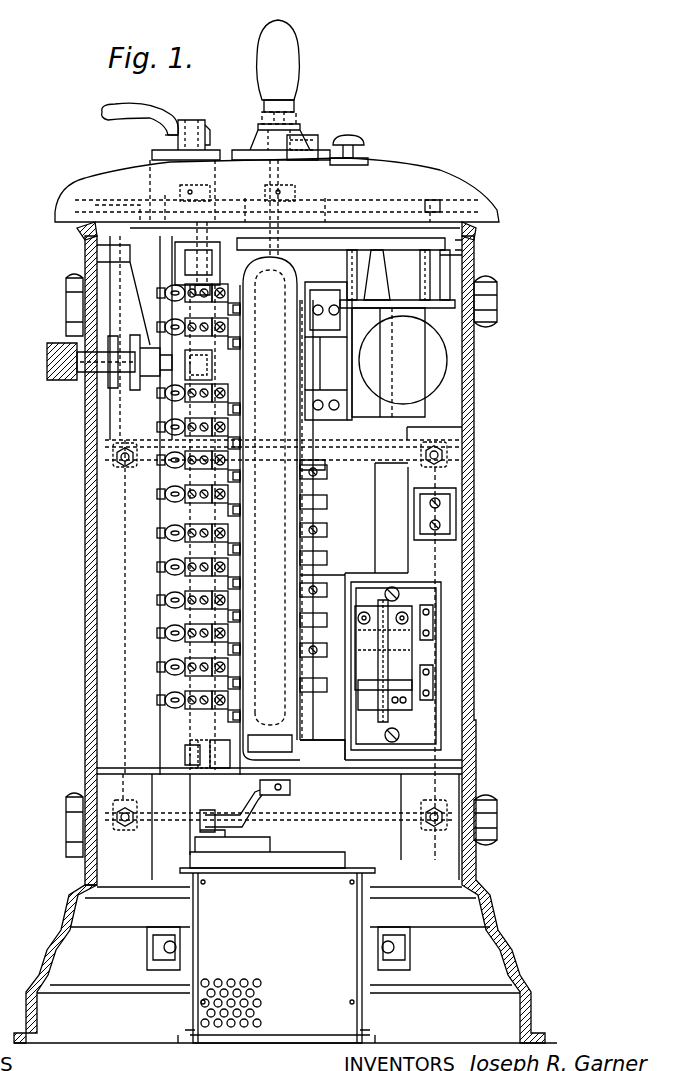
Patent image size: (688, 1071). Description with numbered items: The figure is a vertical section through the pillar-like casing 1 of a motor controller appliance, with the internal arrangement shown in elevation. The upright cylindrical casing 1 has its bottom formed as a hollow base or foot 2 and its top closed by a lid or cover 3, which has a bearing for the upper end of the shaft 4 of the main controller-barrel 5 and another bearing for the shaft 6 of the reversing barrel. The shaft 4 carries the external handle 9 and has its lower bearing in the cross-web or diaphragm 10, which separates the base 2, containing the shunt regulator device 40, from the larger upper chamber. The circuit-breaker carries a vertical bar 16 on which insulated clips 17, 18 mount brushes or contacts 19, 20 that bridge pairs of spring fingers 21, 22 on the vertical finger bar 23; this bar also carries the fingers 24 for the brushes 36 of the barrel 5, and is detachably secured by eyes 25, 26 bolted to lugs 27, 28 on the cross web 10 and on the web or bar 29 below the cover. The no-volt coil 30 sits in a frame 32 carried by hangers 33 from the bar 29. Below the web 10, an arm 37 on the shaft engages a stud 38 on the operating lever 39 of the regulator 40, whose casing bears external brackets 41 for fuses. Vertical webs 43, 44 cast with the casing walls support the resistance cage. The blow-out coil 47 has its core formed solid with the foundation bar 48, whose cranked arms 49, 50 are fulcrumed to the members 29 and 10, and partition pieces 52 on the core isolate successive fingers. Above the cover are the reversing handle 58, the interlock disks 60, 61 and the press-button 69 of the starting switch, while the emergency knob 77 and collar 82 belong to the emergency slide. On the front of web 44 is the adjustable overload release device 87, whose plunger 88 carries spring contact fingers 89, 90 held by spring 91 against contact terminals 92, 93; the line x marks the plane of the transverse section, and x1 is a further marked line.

The pillar-like casing 1 is at (470, 513).
The base or foot 2 is at (505, 957).
The lid or cover 3 is at (445, 191).
The shaft of the main controller-barrel 4 is at (278, 163).
The main controller-barrel 5 is at (325, 521).
The shaft of the reversing barrel 6 is at (165, 165).
The handle 9 is at (286, 68).
The cross-web or diaphragm 10 is at (291, 827).
The vertical bar 16 is at (330, 366).
The insulated clip 17 is at (330, 297).
The insulated clip 18 is at (330, 450).
The brush or contact 19 is at (357, 228).
The brush or contact 20 is at (312, 394).
The spring fingers or terminals 21 is at (213, 305).
The spring fingers or terminals 22 is at (213, 403).
The vertical finger bar 23 is at (197, 549).
The fingers 24 is at (200, 505).
The eye 25 is at (192, 740).
The eye 26 is at (205, 240).
The lug 27 is at (210, 760).
The lug 28 is at (205, 268).
The web or bar 29 is at (155, 222).
The no-volt coil 30 is at (436, 350).
The frame 32 is at (411, 388).
The hangers 33 is at (452, 248).
The brushes 36 is at (320, 562).
The arm 37 is at (255, 815).
The stud or projection 38 is at (205, 812).
The operating lever 39 is at (243, 838).
The shunt regulator device 40 is at (277, 955).
The external brackets 41 is at (150, 960).
The vertical web or flange 43 is at (115, 607).
The vertical web or flange 44 is at (444, 566).
The blow-out coil 47 is at (303, 667).
The foundation bar 48 is at (271, 460).
The arm 49 is at (303, 232).
The arm 50 is at (316, 742).
The partition pieces 52 is at (240, 616).
The operating handle 58 is at (142, 113).
The disk 60 is at (346, 134).
The disk 61 is at (158, 200).
The press-button 69 is at (352, 138).
The emergency knob 77 is at (62, 381).
The collar 82 is at (134, 388).
The adjustable overload release device 87 is at (417, 650).
The plunger 88 is at (411, 691).
The spring contact finger 89 is at (401, 607).
The spring contact finger 90 is at (364, 613).
The spring 91 is at (417, 662).
The contact terminal 92 is at (431, 618).
The contact terminal 93 is at (345, 618).
The section line x is at (448, 272).
The axis line x1 is at (405, 428).